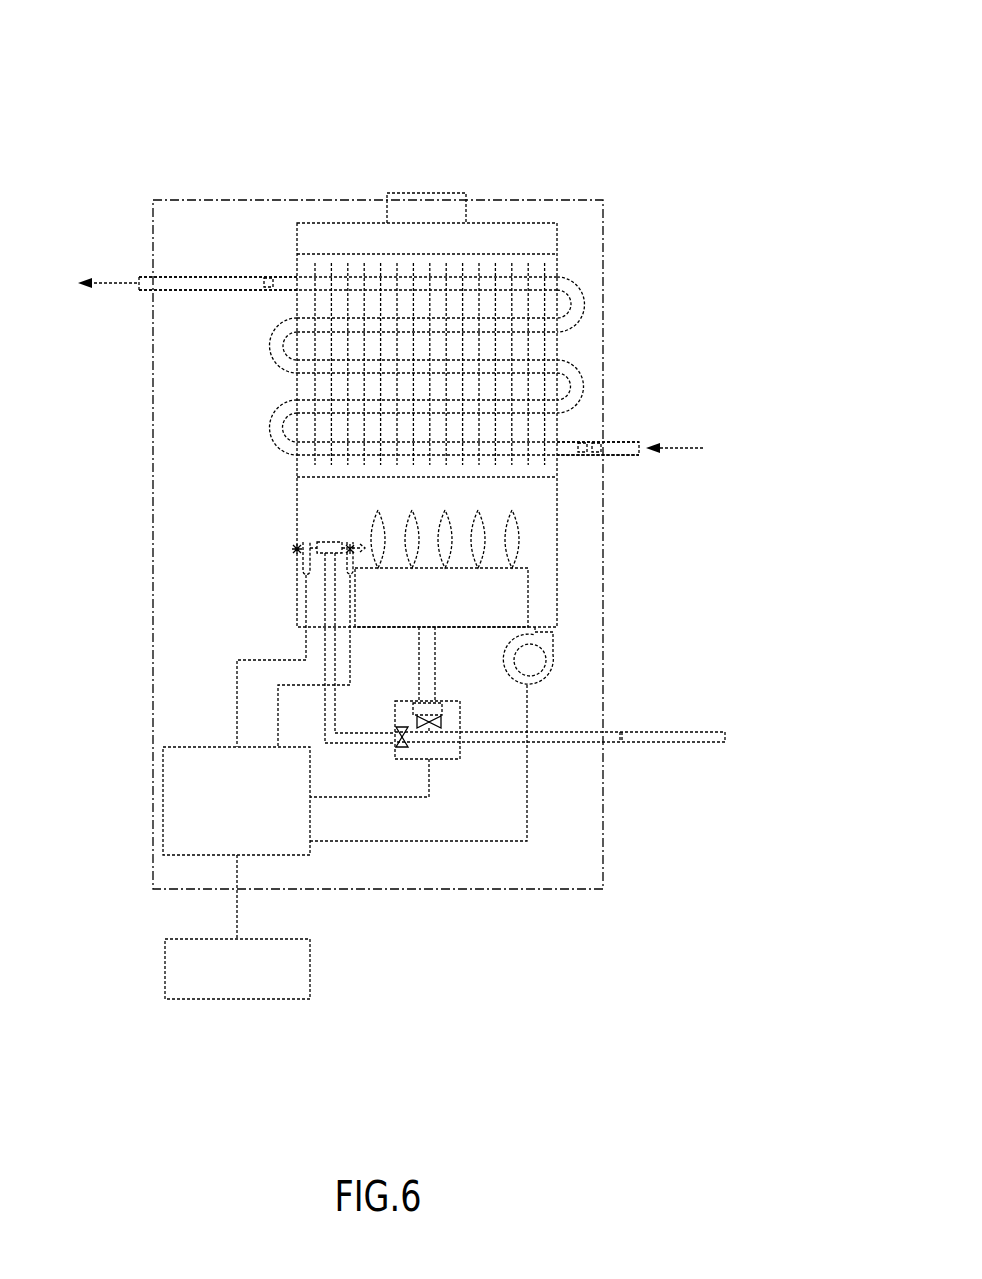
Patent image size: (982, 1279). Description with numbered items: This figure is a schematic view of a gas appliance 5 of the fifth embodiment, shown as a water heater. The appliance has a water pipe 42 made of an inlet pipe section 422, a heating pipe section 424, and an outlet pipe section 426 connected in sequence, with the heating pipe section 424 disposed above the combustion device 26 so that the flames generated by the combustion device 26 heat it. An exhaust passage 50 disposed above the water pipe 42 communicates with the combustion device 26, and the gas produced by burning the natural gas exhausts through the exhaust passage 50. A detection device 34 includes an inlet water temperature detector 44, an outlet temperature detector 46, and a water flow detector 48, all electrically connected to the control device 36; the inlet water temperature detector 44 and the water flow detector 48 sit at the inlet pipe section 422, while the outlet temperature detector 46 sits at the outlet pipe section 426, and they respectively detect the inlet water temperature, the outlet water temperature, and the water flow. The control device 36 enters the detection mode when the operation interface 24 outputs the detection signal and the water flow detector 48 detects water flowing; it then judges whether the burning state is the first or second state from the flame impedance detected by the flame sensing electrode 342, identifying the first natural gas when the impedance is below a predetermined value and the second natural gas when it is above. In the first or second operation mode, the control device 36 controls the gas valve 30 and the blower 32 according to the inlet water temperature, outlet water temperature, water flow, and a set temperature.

The gas appliance 5 is at (609, 118).
The exhaust passage 50 is at (430, 200).
The water pipe 42 is at (584, 289).
The heating pipe section 424 is at (495, 278).
The outlet pipe section 426 is at (200, 280).
The outlet temperature detector 46 is at (264, 287).
The inlet pipe section 422 is at (625, 457).
The inlet water temperature detector 44 is at (584, 445).
The water flow detector 48 is at (598, 447).
The combustion device 26 is at (537, 567).
The detection device 34 is at (294, 548).
The flame sensing electrode 342 is at (303, 558).
The blower 32 is at (553, 660).
The gas valve 30 is at (457, 770).
The control device 36 is at (150, 757).
The operation interface 24 is at (312, 966).